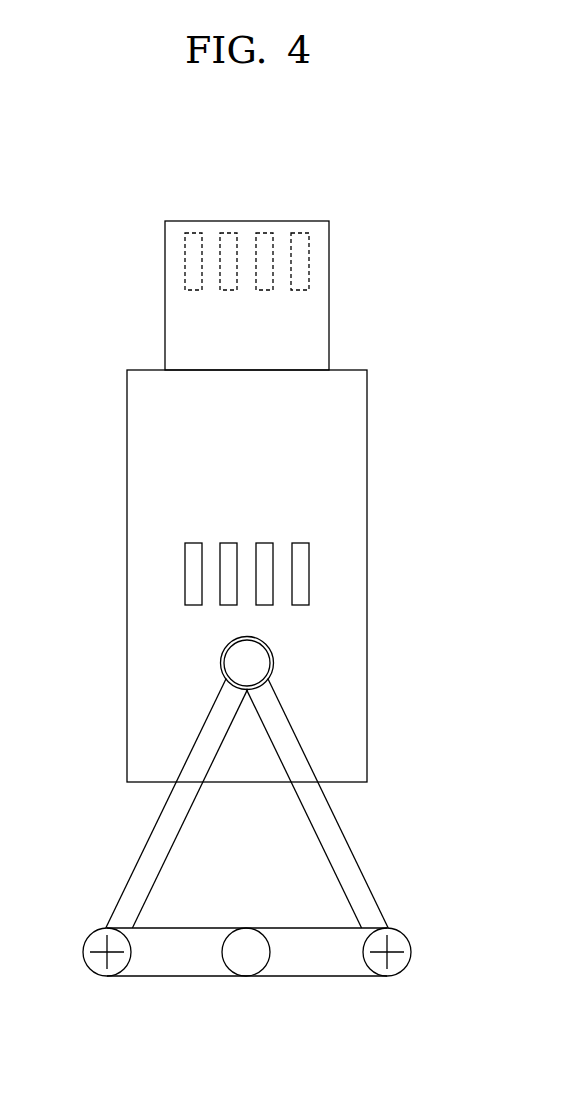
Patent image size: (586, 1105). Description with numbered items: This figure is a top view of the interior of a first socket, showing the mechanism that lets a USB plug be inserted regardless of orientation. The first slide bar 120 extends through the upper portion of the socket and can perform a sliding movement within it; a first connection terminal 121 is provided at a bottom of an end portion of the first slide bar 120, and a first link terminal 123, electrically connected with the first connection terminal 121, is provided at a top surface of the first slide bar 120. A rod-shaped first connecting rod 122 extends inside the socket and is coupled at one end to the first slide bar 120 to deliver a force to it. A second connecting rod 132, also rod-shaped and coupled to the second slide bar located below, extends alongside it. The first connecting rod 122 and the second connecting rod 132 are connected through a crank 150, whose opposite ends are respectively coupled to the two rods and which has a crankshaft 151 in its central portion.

The first slide bar 120 is at (358, 416).
The first connection terminal 121 is at (228, 233).
The first connecting rod 122 is at (355, 873).
The first link terminal 123 is at (305, 577).
The second connecting rod 132 is at (139, 870).
The crank 150 is at (165, 963).
The crankshaft 151 is at (248, 960).